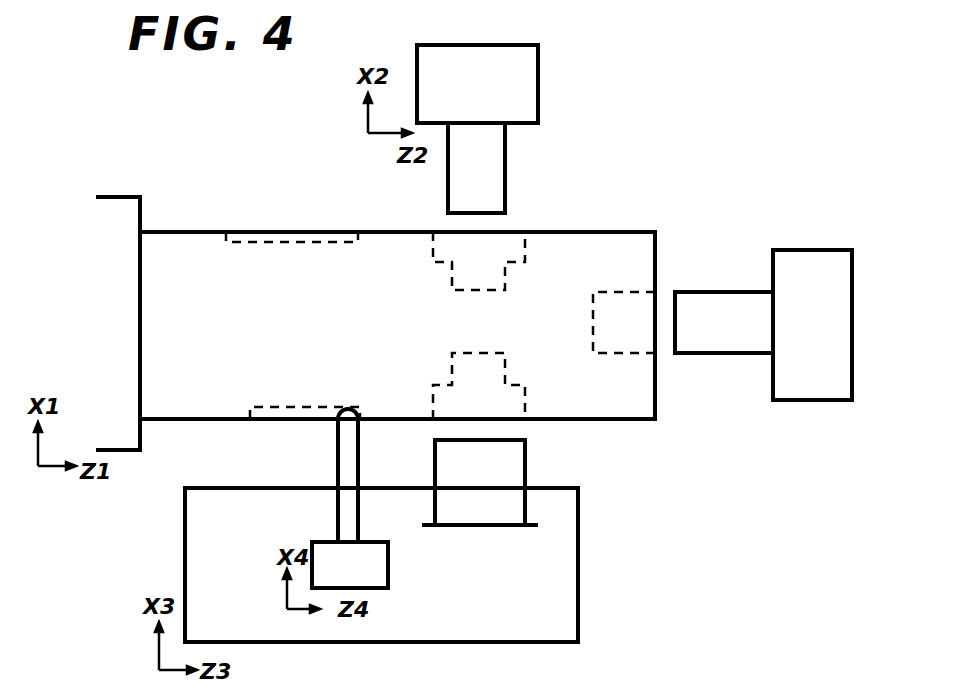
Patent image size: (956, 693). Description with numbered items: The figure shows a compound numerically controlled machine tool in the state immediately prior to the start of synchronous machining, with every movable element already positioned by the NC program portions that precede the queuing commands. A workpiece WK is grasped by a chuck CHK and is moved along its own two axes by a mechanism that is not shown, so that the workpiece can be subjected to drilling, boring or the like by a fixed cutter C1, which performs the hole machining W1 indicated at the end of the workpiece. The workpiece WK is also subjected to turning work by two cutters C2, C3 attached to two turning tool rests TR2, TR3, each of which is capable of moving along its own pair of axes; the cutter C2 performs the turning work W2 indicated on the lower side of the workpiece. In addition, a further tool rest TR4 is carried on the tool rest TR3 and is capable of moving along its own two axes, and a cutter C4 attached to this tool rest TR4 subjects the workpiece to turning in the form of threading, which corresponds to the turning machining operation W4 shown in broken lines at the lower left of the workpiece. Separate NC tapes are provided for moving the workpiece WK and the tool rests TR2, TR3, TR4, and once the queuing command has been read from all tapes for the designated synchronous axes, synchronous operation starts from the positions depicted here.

The chuck CHK is at (122, 294).
The workpiece WK is at (633, 240).
The hole machining W1 is at (562, 337).
The turning work W2 is at (479, 386).
The turning machining operation W4 is at (287, 419).
The turning tool rest TR2 is at (527, 78).
The cutter C2 is at (490, 163).
The fixed cutter C1 is at (718, 340).
The turning tool rest TR3 is at (566, 596).
The cutter C3 is at (515, 455).
The cutter C4 is at (350, 447).
The tool rest TR4 is at (378, 573).